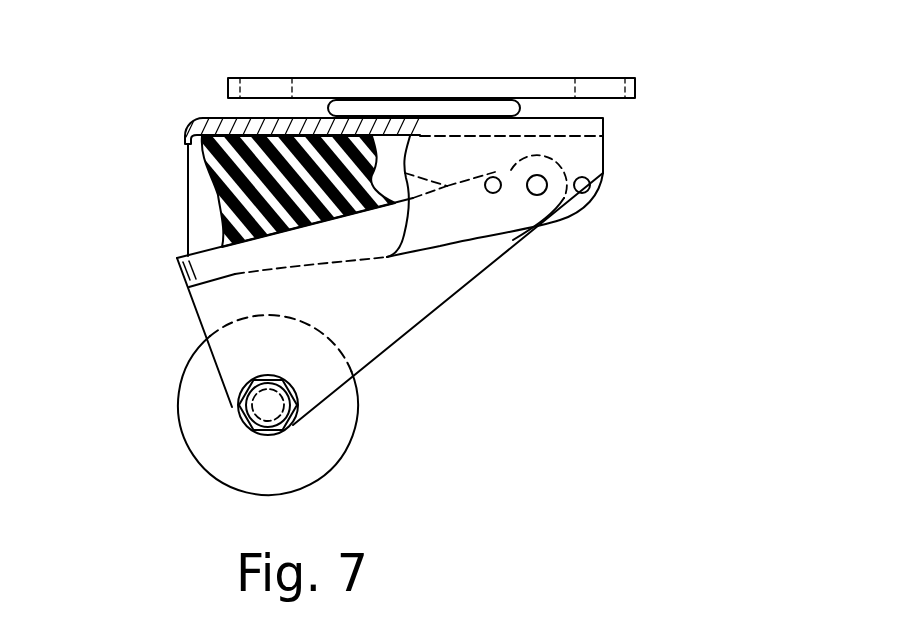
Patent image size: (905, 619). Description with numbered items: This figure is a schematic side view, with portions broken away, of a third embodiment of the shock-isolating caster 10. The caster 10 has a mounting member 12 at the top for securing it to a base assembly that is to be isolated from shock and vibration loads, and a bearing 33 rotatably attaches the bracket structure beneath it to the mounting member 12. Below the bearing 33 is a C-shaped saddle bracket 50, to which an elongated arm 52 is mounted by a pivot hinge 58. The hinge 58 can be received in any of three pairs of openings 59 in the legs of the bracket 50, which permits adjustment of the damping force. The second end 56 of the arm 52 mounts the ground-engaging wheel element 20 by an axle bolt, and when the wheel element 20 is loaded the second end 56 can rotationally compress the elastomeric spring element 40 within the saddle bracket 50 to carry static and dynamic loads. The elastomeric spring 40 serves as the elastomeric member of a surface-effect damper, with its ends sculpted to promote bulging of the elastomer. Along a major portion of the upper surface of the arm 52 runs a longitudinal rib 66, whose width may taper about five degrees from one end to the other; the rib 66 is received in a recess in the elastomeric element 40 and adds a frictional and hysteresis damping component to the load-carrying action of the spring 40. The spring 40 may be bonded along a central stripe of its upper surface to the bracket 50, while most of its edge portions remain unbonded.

The caster 10 is at (150, 462).
The mounting member 12 is at (528, 62).
The wheel element 20 is at (383, 420).
The bearing 33 is at (546, 108).
The elastomeric spring element 40 is at (175, 178).
The C-shaped saddle bracket 50 is at (190, 105).
The elongated arm 52 is at (400, 290).
The second end 56 is at (195, 320).
The pivot hinge 58 is at (537, 185).
The openings 59 is at (497, 177).
The longitudinal rib 66 is at (178, 258).